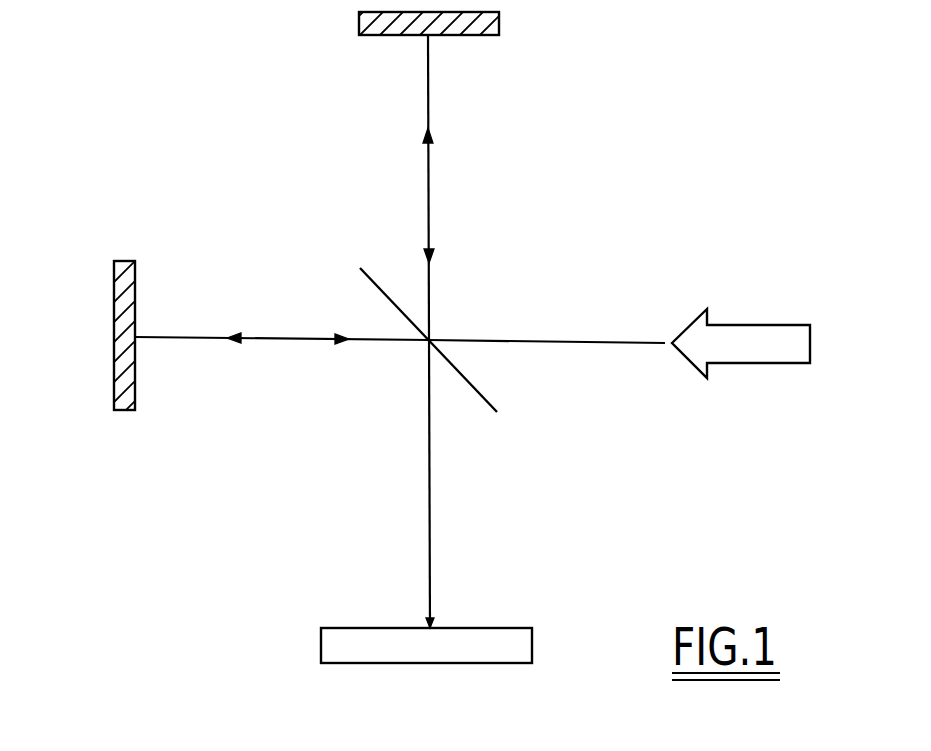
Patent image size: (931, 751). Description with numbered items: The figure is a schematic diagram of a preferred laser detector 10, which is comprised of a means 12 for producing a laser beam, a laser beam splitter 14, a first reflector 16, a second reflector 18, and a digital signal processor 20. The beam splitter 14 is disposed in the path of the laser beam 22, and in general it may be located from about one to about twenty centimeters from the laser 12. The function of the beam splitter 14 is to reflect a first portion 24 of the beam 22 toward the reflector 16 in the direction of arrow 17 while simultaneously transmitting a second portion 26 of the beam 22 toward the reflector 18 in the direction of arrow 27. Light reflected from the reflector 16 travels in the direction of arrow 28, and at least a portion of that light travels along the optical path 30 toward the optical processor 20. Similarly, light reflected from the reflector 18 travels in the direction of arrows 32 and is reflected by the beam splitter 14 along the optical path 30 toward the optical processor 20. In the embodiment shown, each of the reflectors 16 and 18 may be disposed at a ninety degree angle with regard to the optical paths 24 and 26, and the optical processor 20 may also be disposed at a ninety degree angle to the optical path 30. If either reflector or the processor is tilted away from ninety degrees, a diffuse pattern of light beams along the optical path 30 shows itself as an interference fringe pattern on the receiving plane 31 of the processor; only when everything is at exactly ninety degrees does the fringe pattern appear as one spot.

The laser detector 10 is at (235, 166).
The means for producing a laser beam 12 is at (767, 325).
The laser beam splitter 14 is at (394, 252).
The first reflector 16 is at (500, 23).
The arrow 17 is at (431, 132).
The second reflector 18 is at (113, 353).
The digital signal processor 20 is at (322, 653).
The laser beam 22 is at (590, 312).
The first portion of beam 24 is at (430, 193).
The second portion of beam 26 is at (299, 308).
The arrow 27 is at (226, 340).
The arrow 28 is at (432, 258).
The optical path 30 is at (430, 503).
The receiving plane 31 is at (432, 625).
The arrows 32 is at (340, 344).